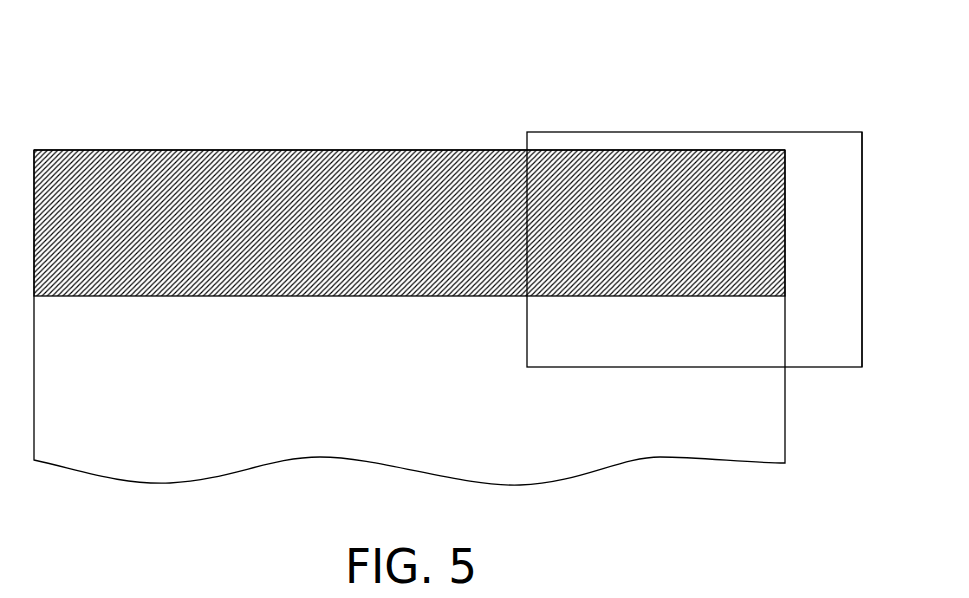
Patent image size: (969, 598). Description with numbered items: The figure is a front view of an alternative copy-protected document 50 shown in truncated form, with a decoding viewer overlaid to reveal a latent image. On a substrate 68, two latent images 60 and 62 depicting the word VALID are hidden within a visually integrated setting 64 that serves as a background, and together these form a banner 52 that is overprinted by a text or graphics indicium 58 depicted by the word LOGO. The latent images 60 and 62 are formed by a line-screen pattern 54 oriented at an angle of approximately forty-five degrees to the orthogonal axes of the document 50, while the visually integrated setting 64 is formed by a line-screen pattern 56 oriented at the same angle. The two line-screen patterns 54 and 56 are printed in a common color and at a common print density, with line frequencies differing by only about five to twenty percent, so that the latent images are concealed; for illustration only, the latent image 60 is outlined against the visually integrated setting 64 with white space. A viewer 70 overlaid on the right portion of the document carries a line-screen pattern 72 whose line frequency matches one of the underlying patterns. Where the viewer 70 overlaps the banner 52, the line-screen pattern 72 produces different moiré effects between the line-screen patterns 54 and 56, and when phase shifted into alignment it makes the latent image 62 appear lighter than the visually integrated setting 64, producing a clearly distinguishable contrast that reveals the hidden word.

The copy-protected document 50 is at (409, 258).
The banner 52 is at (409, 229).
The line-screen pattern 54 is at (143, 195).
The line-screen pattern 56 is at (421, 258).
The text or graphics indicium 58 is at (385, 182).
The latent image 60 is at (181, 276).
The latent image 62 is at (632, 178).
The visually integrated setting 64 is at (282, 160).
The substrate 68 is at (503, 435).
The viewer 70 is at (707, 244).
The line-screen pattern 72 is at (822, 330).